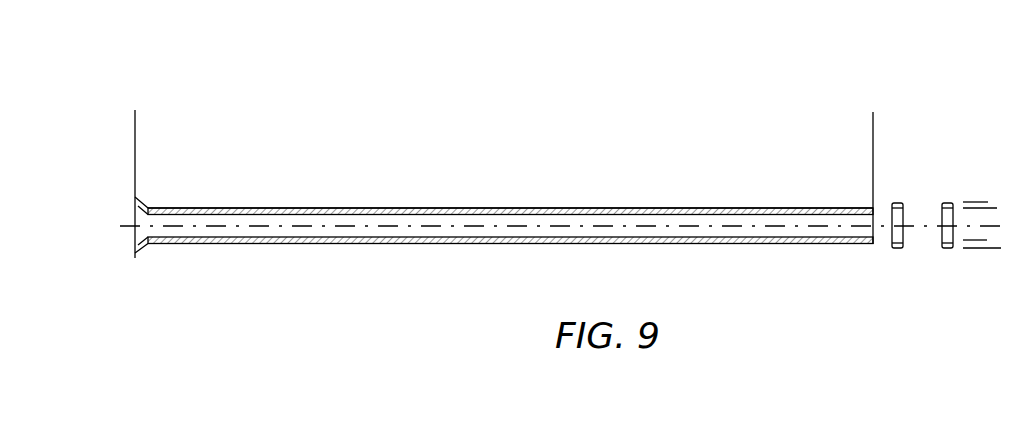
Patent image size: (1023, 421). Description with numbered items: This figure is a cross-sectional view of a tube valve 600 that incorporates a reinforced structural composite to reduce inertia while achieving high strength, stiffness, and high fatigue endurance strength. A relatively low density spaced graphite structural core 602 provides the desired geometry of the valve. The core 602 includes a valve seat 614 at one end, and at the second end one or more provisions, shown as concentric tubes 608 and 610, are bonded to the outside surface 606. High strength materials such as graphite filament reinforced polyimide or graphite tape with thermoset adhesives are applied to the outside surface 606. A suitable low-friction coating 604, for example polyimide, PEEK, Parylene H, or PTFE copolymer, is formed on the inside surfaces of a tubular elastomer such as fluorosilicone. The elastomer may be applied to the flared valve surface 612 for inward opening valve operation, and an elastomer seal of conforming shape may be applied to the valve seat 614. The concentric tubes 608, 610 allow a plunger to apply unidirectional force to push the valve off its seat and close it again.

The tube valve 600 is at (189, 86).
The spaced graphite structural core 602 is at (723, 210).
The low-friction coating 604 is at (513, 233).
The outside surface 606 is at (390, 207).
The concentric tube 608 is at (897, 248).
The concentric tube 610 is at (947, 248).
The flared valve surface 612 is at (133, 216).
The valve seat 614 is at (137, 205).